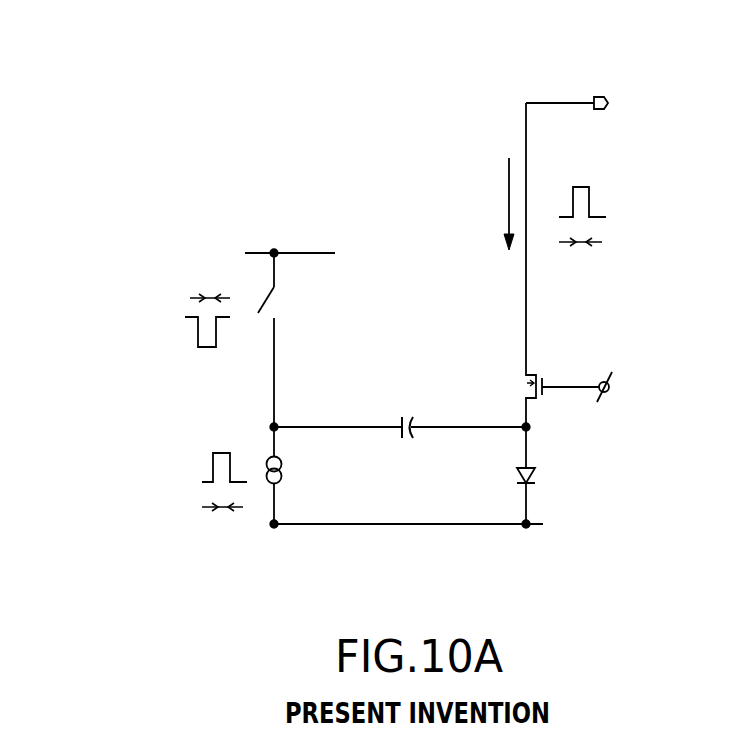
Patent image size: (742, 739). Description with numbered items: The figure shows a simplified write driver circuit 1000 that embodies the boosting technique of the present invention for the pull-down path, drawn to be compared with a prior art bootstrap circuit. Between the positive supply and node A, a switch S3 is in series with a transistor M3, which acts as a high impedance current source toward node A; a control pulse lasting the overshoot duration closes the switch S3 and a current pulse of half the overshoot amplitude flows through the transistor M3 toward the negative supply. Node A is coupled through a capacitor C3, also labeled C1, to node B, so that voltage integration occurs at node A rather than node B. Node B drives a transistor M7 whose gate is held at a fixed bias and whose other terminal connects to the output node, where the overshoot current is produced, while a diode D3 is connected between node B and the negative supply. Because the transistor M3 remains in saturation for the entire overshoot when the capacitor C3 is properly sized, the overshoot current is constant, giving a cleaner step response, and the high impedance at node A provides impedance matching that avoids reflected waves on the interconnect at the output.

The write driver circuit 1000 is at (222, 160).
The switch S3 is at (280, 356).
The transistor M3 is at (299, 475).
The capacitor C3 is at (400, 414).
The capacitor C1 is at (407, 460).
The transistor M7 is at (543, 265).
The diode D3 is at (511, 475).